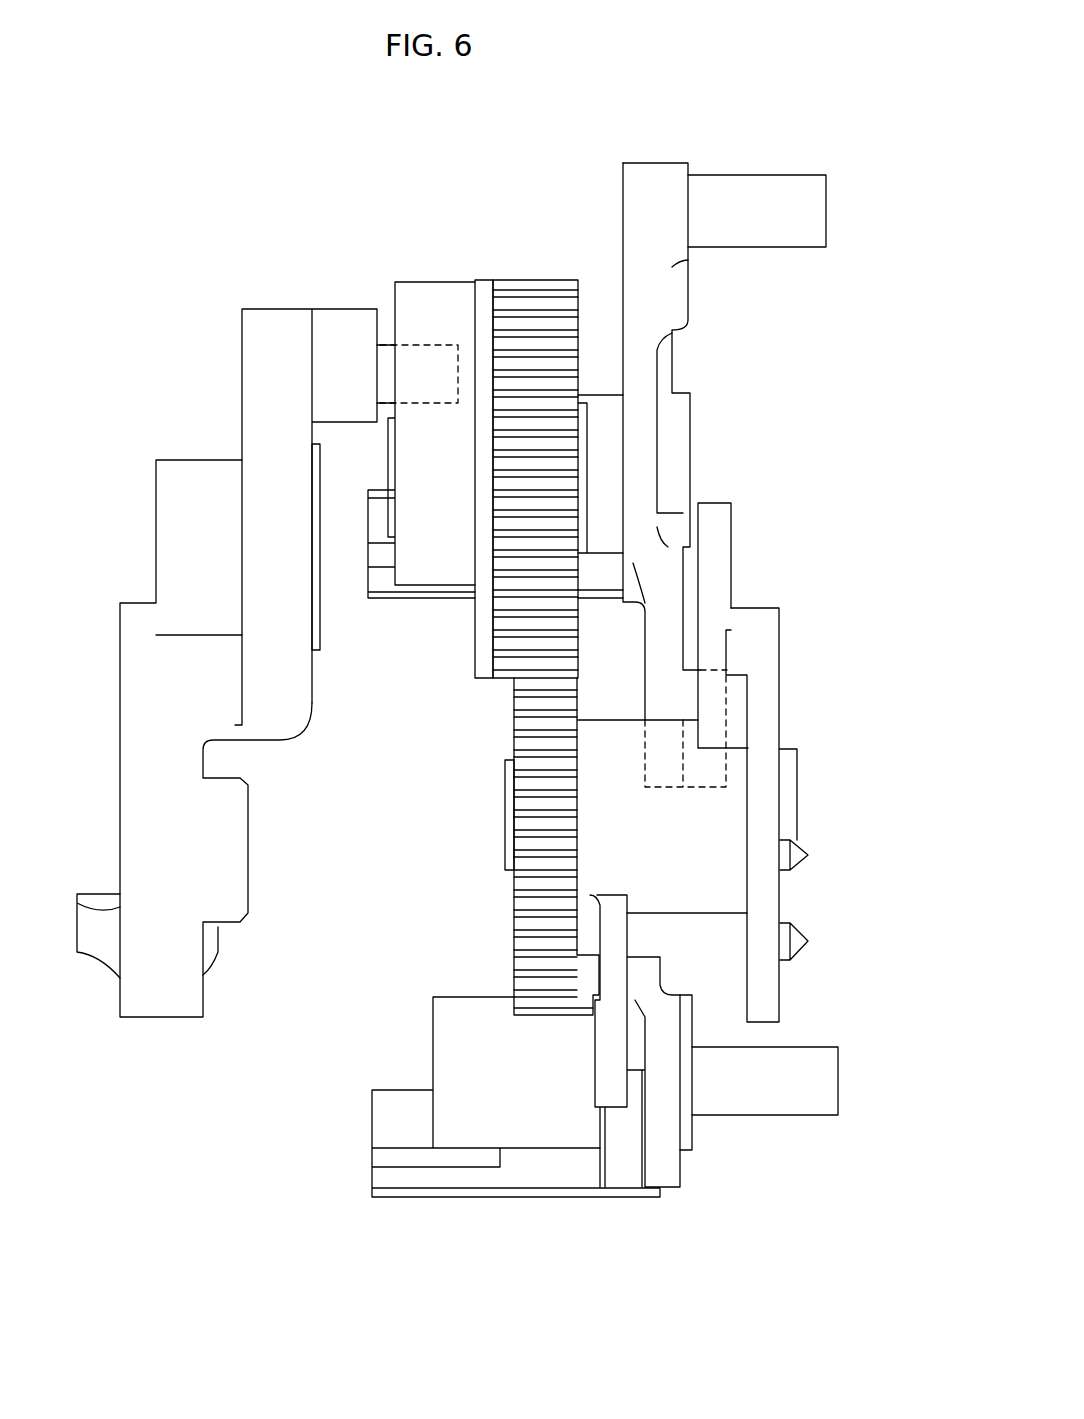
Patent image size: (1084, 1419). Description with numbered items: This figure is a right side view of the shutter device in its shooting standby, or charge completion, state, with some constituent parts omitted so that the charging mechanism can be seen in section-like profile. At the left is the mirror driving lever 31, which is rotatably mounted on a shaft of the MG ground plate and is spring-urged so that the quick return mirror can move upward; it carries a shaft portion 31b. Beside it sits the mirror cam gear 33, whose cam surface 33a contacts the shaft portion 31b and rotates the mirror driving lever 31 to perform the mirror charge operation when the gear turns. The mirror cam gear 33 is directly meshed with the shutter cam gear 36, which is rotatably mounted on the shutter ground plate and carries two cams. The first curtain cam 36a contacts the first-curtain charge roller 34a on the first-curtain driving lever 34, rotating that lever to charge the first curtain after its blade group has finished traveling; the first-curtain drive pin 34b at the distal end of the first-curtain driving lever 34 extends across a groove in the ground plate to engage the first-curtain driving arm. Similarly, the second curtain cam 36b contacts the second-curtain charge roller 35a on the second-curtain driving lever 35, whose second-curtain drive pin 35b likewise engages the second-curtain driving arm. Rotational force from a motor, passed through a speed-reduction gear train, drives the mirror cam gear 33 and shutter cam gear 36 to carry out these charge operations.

The mirror driving lever 31 is at (287, 310).
The shaft portion 31b is at (427, 357).
The mirror cam gear 33 is at (545, 298).
The cam surface 33a is at (455, 297).
The first-curtain driving lever 34 is at (520, 1135).
The first-curtain charge roller 34a is at (628, 1172).
The first-curtain drive pin 34b is at (773, 1098).
The second-curtain driving lever 35 is at (648, 185).
The second-curtain charge roller 35a is at (703, 775).
The second-curtain drive pin 35b is at (763, 193).
The shutter cam gear 36 is at (765, 797).
The first curtain cam 36a is at (605, 1072).
The second curtain cam 36b is at (715, 510).